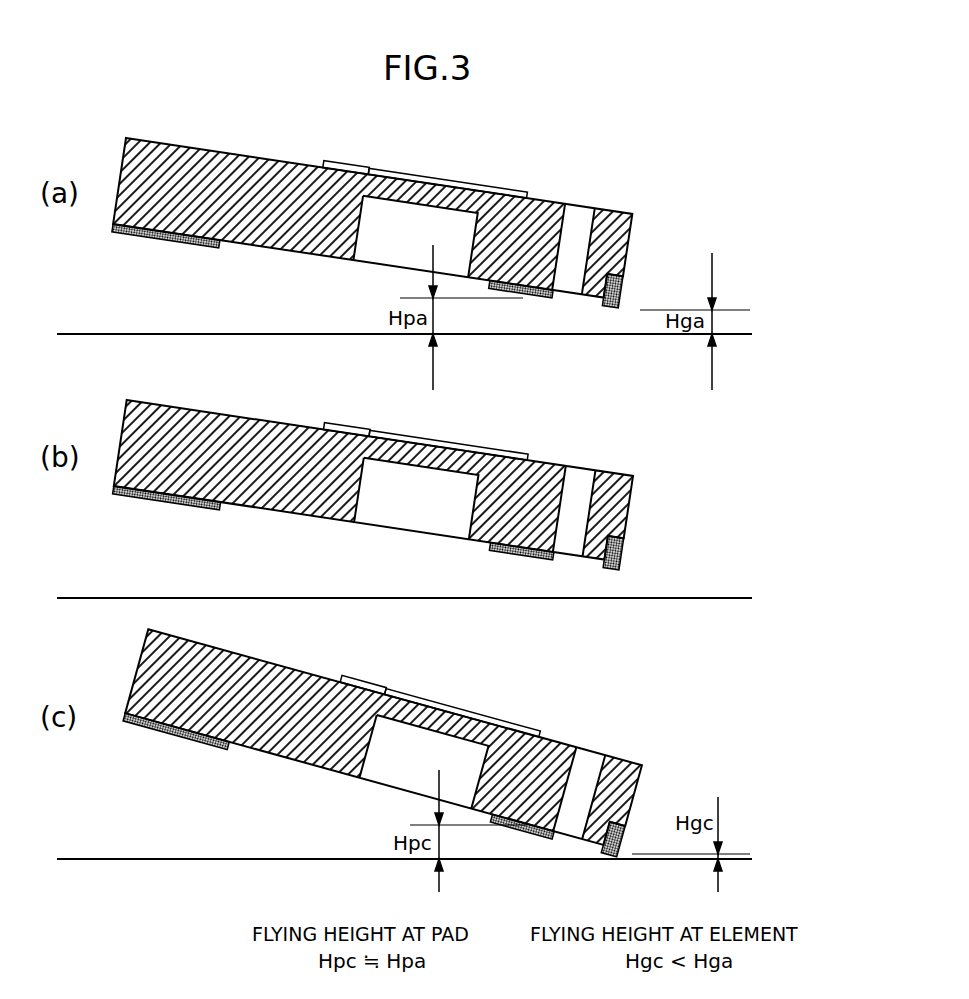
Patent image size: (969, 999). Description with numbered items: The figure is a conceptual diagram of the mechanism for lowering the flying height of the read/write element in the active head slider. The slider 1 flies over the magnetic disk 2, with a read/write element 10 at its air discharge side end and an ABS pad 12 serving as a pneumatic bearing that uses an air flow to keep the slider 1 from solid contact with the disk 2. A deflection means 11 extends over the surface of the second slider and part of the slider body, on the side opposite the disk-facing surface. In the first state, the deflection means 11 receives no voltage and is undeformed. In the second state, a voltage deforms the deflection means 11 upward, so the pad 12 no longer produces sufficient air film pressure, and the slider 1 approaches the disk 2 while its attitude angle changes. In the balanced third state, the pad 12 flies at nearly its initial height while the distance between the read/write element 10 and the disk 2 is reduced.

The slider 1 is at (236, 159).
The magnetic disk 2 is at (125, 333).
The read/write element 10 is at (623, 287).
The deflection means 11 is at (506, 187).
The ABS pad 12 is at (186, 248).